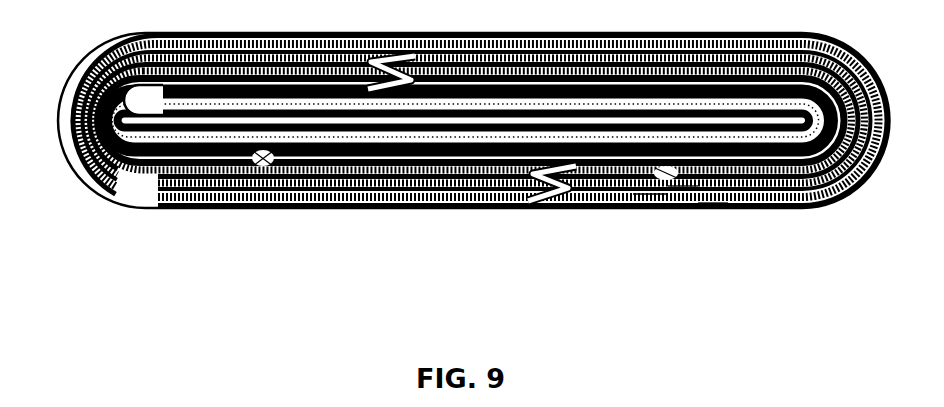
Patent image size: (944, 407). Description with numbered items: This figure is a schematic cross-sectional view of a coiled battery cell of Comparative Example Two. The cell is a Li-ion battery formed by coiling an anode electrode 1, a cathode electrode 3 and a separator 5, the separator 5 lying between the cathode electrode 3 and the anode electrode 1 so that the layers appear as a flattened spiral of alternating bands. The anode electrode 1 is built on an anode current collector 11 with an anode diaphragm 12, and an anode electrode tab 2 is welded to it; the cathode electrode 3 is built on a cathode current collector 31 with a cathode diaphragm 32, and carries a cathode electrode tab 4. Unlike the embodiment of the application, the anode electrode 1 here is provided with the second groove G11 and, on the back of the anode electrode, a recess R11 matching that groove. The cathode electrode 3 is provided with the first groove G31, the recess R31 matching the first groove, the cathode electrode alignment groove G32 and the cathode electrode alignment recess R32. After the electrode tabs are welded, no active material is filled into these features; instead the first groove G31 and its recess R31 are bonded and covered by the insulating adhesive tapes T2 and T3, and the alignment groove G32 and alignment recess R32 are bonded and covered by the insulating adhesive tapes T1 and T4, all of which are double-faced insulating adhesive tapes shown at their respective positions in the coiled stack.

The anode electrode 1 is at (12, 152).
The anode current collector 11 is at (80, 142).
The anode diaphragm 12 is at (54, 133).
The anode electrode tab 2 is at (214, 197).
The cathode electrode 3 is at (353, 256).
The cathode current collector 31 is at (355, 198).
The cathode diaphragm 32 is at (298, 198).
The cathode electrode tab 4 is at (612, 198).
The separator 5 is at (403, 198).
The second groove G11 is at (197, 197).
The first groove G31 is at (588, 198).
The cathode electrode alignment groove G32 is at (167, 197).
The recess matching with the second groove R11 is at (283, 198).
The recess matching with the first groove R31 is at (635, 198).
The cathode electrode alignment recess R32 is at (247, 198).
The insulating adhesive tape of a cathode electrode tab T1 is at (255, 198).
The insulating adhesive tape of a cathode electrode tab T2 is at (695, 198).
The insulating adhesive tape of R31 T3 is at (670, 198).
The insulating adhesive tape of R32 T4 is at (233, 200).